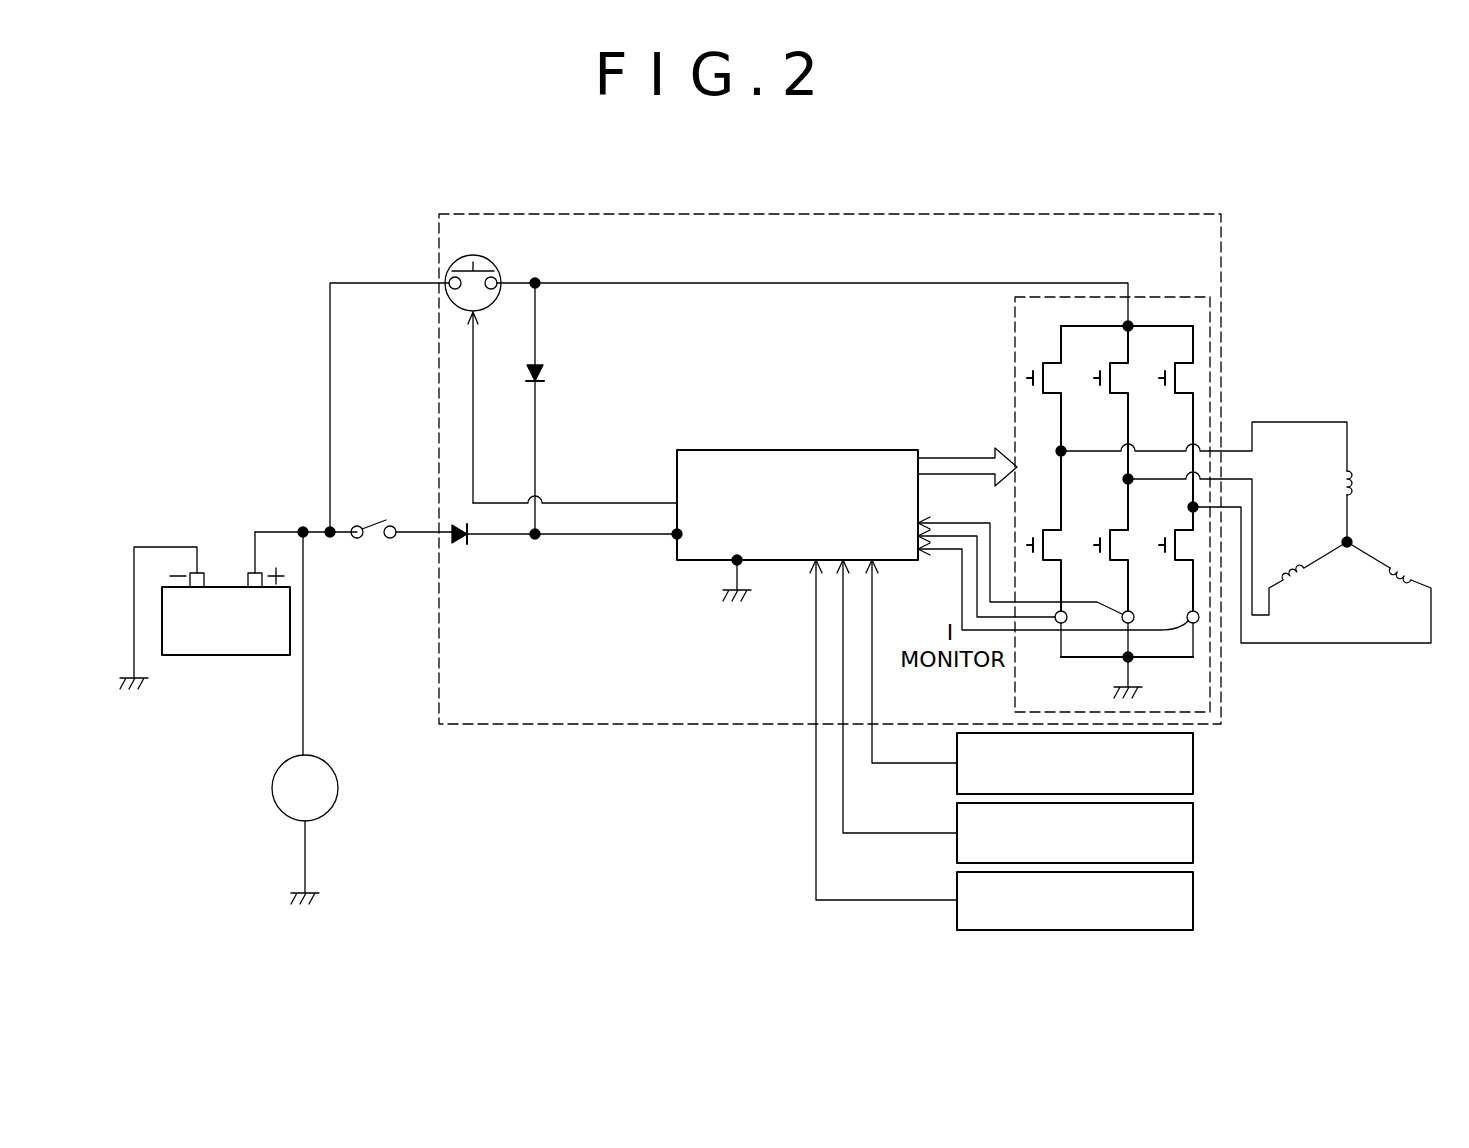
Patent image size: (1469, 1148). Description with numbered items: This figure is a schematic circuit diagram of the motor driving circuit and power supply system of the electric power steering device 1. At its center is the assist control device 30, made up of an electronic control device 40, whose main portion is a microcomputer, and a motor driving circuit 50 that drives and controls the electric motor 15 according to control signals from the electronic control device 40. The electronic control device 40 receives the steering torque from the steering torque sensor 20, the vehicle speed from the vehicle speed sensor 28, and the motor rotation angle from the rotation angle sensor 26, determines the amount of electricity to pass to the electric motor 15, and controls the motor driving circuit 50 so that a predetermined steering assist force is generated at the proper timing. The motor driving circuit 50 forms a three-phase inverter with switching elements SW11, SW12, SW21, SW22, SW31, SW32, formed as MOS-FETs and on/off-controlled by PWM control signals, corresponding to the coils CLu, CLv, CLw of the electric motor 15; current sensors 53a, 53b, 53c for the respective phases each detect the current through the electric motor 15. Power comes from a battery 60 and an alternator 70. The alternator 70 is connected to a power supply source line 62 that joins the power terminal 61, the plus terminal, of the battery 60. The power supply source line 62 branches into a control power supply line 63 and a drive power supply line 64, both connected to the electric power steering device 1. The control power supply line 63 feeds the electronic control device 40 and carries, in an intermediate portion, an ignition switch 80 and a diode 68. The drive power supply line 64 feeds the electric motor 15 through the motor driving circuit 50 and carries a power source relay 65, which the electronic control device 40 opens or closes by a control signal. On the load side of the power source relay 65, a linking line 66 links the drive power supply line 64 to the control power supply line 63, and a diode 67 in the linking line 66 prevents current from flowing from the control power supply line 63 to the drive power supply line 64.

The electric power steering device 1 is at (1260, 280).
The electric motor 15 is at (1246, 500).
The steering torque sensor 20 is at (1193, 833).
The rotation angle sensor 26 is at (1193, 900).
The vehicle speed sensor 28 is at (1193, 763).
The assist control device 30 is at (778, 214).
The electronic control device 40 is at (862, 450).
The motor driving circuit 50 is at (1170, 297).
The current sensor 53a is at (1058, 624).
The current sensor 53b is at (1134, 614).
The current sensor 53c is at (1198, 620).
The battery 60 is at (218, 656).
The power terminal 61 is at (253, 571).
The power supply source line 62 is at (280, 531).
The control power supply line 63 is at (501, 536).
The drive power supply line 64 is at (725, 282).
The power source relay 65 is at (474, 255).
The linking line 66 is at (530, 448).
The diode 67 is at (528, 376).
The diode 68 is at (460, 545).
The alternator 70 is at (323, 761).
The ignition switch 80 is at (366, 527).
The switching element SW11 is at (1050, 362).
The switching element SW12 is at (1050, 528).
The switching element SW21 is at (1118, 362).
The switching element SW22 is at (1118, 528).
The switching element SW31 is at (1186, 362).
The switching element SW32 is at (1186, 528).
The coil CLu is at (1353, 486).
The coil CLv is at (1300, 580).
The coil CLw is at (1402, 580).